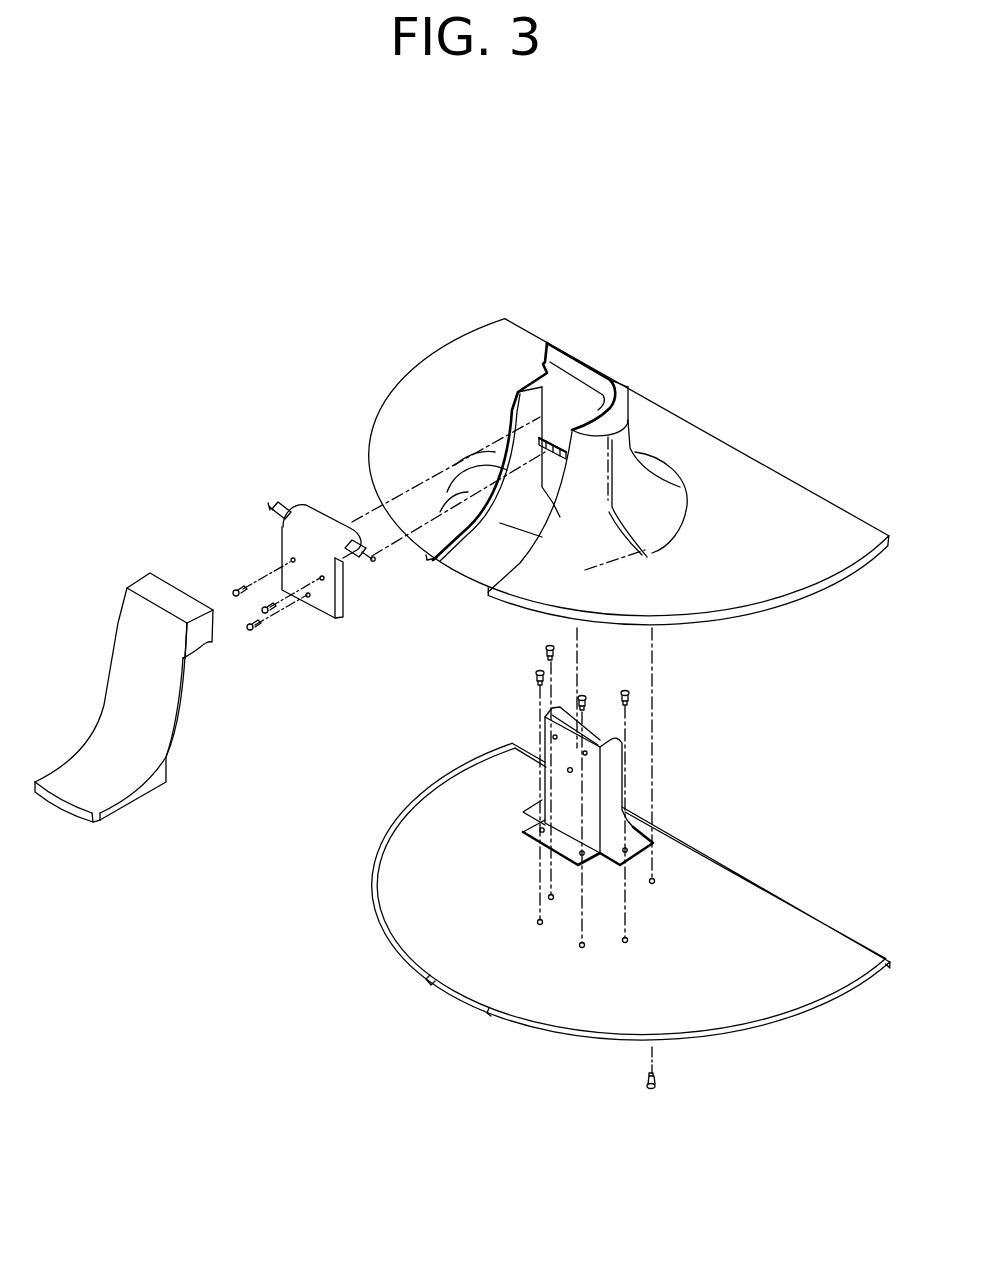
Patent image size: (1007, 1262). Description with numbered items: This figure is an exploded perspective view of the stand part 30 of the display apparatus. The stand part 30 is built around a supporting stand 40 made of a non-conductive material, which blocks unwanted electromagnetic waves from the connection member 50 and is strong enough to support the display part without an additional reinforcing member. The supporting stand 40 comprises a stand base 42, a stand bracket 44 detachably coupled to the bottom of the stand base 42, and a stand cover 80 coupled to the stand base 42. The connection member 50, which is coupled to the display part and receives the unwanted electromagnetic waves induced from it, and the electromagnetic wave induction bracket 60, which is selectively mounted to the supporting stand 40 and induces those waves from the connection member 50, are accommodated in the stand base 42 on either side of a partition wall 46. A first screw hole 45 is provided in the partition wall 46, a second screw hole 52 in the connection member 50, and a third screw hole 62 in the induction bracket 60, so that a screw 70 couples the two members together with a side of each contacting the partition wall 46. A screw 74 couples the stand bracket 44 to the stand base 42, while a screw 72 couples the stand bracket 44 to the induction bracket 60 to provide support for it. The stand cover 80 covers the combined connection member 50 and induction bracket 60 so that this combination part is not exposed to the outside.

The stand part 30 is at (210, 362).
The supporting stand 40 is at (408, 704).
The stand base 42 is at (506, 600).
The stand bracket 44 is at (402, 807).
The first screw hole 45 is at (555, 407).
The partition wall 46 is at (562, 420).
The connection member 50 is at (283, 528).
The second screw hole 52 is at (290, 558).
The electromagnetic wave induction bracket 60 is at (613, 790).
The third screw hole 62 is at (574, 768).
The screw 70 is at (233, 590).
The screw 72 is at (632, 693).
The screw 74 is at (657, 1087).
The stand cover 80 is at (168, 742).